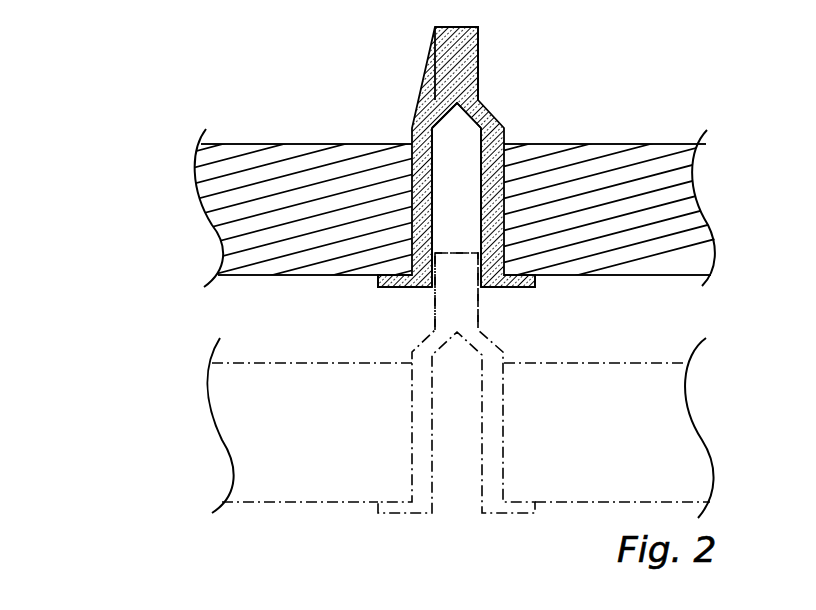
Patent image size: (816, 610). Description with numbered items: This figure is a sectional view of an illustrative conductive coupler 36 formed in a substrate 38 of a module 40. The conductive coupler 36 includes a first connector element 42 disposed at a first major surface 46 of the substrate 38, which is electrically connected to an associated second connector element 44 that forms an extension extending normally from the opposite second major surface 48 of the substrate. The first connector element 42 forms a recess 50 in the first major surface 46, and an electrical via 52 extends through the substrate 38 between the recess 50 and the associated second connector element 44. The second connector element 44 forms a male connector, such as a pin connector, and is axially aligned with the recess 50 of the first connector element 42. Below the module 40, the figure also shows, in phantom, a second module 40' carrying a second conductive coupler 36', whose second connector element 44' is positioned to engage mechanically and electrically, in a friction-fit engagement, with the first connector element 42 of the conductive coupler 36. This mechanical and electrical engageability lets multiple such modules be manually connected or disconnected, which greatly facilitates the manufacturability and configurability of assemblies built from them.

The conductive coupler 36 is at (414, 157).
The second conductive coupler 36' is at (485, 383).
The substrate 38 is at (608, 172).
The module 40 is at (389, 208).
The second module 40' is at (392, 428).
The first connector element 42 is at (381, 298).
The second connector element 44 is at (420, 63).
The second connector element of second conductive coupler 44' is at (456, 270).
The first major surface 46 is at (311, 277).
The second major surface 48 is at (277, 143).
The recess 50 is at (471, 196).
The electrical via 52 is at (433, 163).